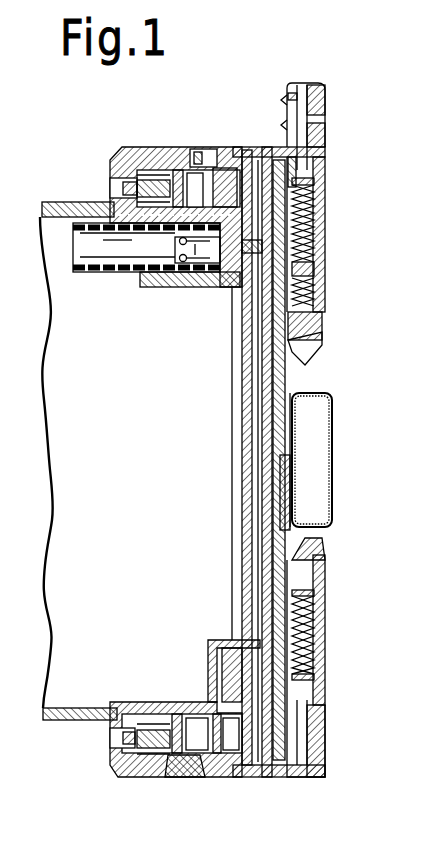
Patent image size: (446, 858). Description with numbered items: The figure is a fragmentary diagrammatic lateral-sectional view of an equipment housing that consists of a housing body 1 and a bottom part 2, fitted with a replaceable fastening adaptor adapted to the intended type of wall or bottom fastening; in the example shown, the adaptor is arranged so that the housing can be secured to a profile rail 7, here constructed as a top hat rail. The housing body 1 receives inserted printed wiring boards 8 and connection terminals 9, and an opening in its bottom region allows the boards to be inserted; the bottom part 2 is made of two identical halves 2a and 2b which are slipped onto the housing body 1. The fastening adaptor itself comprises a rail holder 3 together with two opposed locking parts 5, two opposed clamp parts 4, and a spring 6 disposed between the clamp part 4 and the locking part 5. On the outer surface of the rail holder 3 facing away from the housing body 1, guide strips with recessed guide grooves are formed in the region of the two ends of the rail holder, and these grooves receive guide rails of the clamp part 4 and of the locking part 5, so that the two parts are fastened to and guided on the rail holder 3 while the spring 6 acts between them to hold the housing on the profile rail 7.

The housing body 1 is at (114, 153).
The bottom part 2 is at (250, 147).
The half of the bottom part 2a is at (268, 392).
The half of the bottom part 2b is at (286, 520).
The rail holder 3 is at (300, 157).
The clamp part 4 is at (308, 347).
The locking part 5 is at (325, 99).
The spring 6 is at (302, 243).
The profile rail 7 is at (335, 461).
The printed wiring boards 8 is at (249, 523).
The connection terminals 9 is at (176, 778).